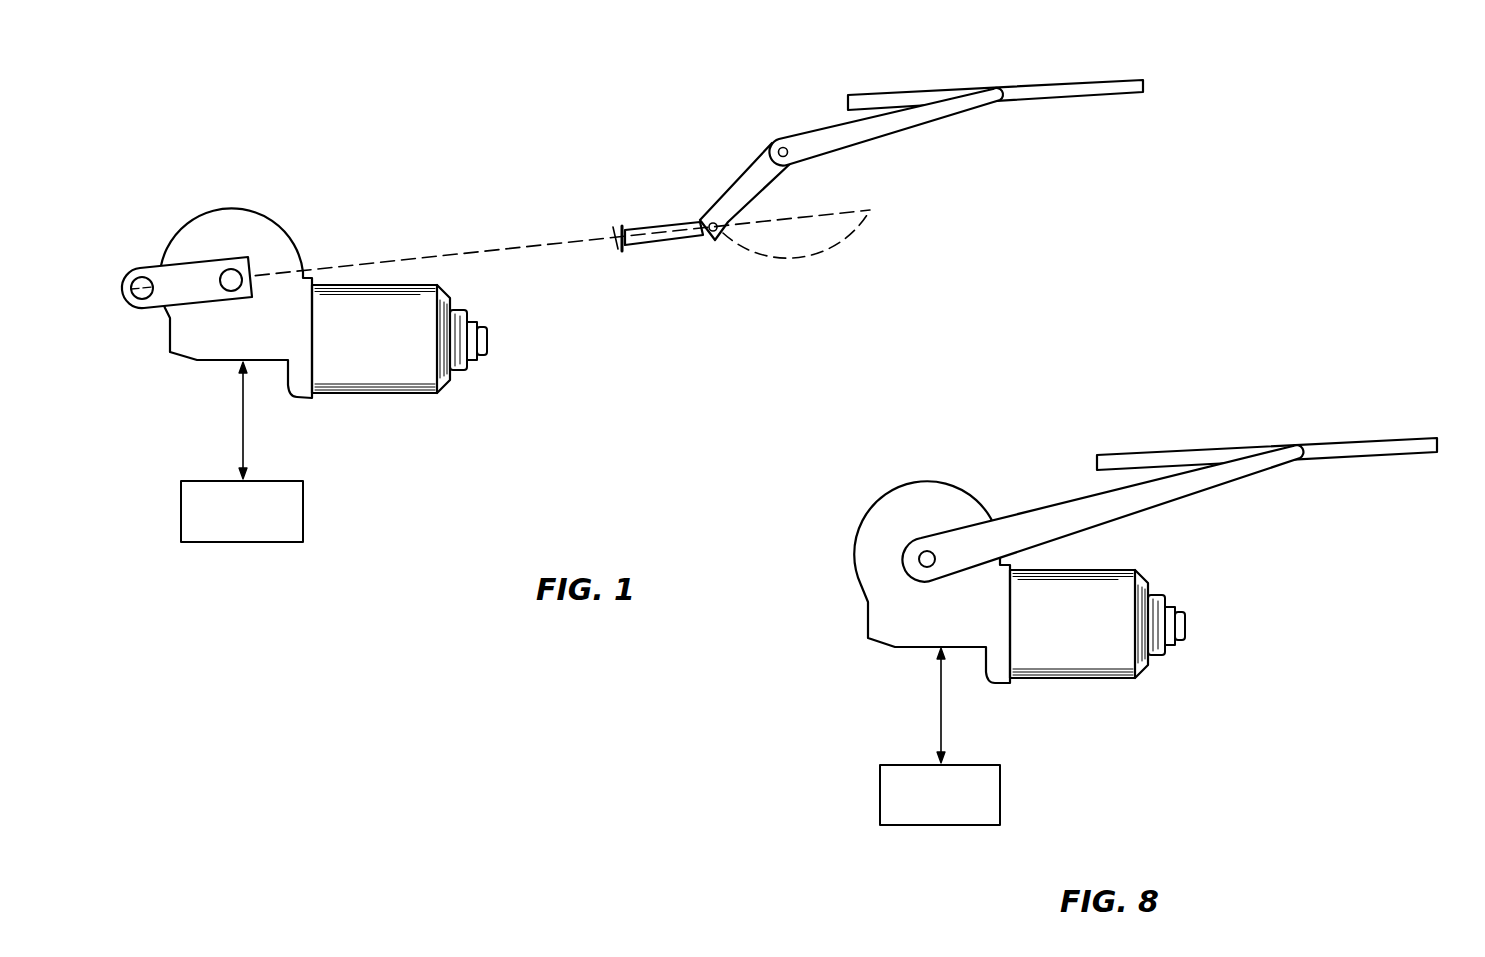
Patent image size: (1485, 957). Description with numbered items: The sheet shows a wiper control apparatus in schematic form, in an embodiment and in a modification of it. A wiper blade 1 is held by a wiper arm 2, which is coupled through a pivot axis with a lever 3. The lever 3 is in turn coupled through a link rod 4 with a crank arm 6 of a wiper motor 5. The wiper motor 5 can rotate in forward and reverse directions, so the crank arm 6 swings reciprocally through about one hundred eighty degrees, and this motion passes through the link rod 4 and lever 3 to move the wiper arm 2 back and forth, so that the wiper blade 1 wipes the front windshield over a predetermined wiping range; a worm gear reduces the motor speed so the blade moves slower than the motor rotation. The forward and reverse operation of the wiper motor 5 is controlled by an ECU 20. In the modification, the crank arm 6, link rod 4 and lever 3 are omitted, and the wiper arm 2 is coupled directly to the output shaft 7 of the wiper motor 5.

In FIG. 1, the wiper blade 1 is at (1077, 98).
In FIG. 8, the wiper blade 1 is at (1358, 445).
In FIG. 1, the wiper arm 2 is at (892, 132).
In FIG. 8, the wiper arm 2 is at (1027, 520).
In FIG. 1, the lever 3 is at (757, 195).
In FIG. 1, the link rod 4 is at (653, 243).
In FIG. 1, the wiper motor 5 is at (353, 397).
In FIG. 8, the wiper motor 5 is at (1080, 680).
In FIG. 1, the crank arm 6 is at (150, 265).
In FIG. 8, the crank arm 6 is at (853, 563).
In FIG. 1, the output shaft 7 is at (225, 270).
In FIG. 8, the output shaft 7 is at (915, 547).
In FIG. 1, the ECU 20 is at (305, 503).
In FIG. 8, the ECU 20 is at (1002, 797).